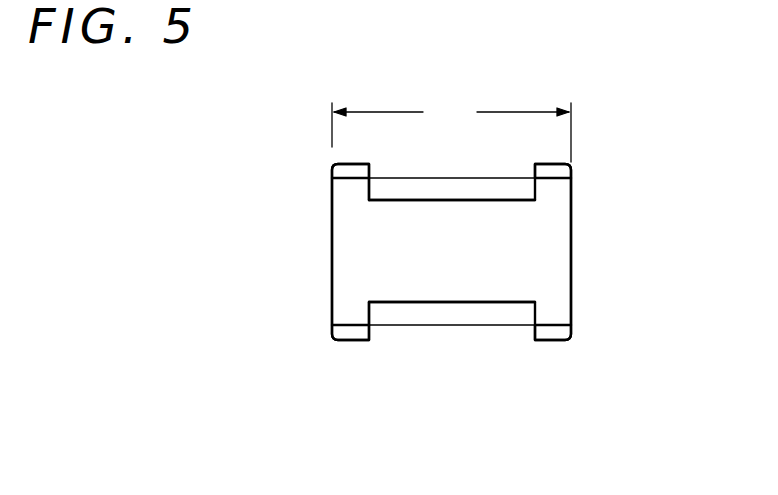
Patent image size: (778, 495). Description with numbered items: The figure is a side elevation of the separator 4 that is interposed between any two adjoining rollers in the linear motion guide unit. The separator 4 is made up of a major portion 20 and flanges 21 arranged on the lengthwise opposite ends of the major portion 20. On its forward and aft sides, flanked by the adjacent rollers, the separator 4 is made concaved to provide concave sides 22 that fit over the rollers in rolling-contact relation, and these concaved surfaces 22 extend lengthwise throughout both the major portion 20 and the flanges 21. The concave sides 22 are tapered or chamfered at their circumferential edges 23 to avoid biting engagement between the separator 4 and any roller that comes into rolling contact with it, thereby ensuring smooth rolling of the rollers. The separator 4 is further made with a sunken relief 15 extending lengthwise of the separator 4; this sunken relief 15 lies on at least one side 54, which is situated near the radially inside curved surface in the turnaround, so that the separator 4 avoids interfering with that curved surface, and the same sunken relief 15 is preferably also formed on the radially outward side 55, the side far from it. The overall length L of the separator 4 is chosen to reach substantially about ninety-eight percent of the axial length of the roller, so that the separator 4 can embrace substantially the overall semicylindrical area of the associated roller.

The separator 4 is at (575, 222).
The sunken relief 15 is at (492, 175).
The major portion 20 is at (490, 252).
The flanges 21 is at (345, 170).
The concave sides 22 is at (390, 238).
The circumferential edges 23 is at (432, 190).
The side 54 is at (420, 325).
The radially outward side 55 is at (392, 178).
The length L is at (451, 130).